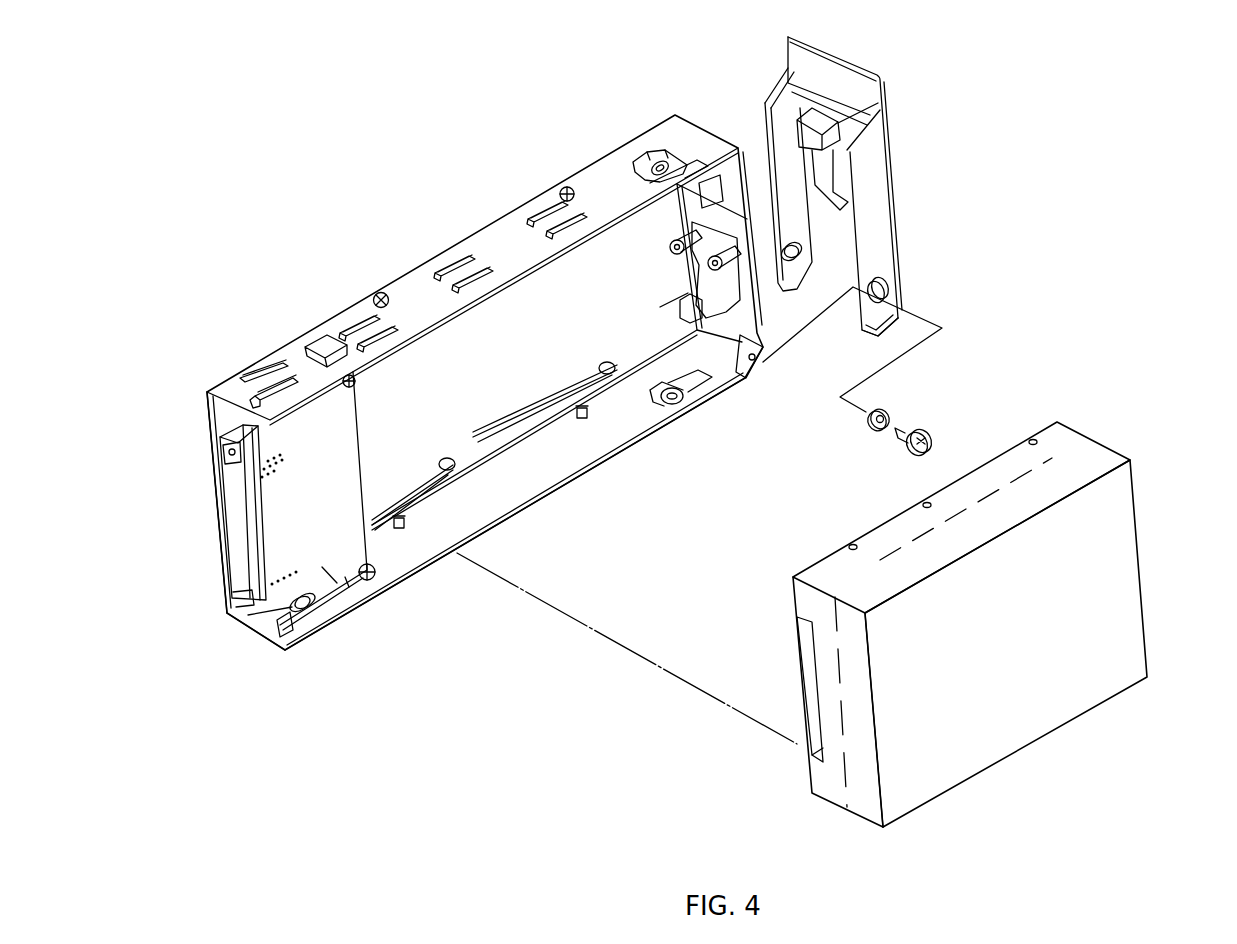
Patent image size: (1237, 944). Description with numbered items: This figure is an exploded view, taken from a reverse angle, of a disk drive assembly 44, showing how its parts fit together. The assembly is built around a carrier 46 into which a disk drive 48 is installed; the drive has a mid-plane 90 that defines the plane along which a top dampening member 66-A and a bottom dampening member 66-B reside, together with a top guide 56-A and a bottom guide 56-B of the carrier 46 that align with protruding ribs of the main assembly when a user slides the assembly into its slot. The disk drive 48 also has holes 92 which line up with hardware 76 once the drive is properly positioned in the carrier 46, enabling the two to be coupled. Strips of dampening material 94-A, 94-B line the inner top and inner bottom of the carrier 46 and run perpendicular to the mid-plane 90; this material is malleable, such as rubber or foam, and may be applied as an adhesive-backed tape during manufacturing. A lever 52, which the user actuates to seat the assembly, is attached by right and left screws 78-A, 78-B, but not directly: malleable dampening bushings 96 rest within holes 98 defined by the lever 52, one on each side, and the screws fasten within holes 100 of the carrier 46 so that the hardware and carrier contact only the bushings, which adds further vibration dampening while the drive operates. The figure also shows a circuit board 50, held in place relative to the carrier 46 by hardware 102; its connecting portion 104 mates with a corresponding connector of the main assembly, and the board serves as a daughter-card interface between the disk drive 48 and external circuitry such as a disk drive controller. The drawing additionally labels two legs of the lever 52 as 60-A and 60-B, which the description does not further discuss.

The disk drive assembly 44 is at (1118, 130).
The carrier 46 is at (496, 381).
The disk drive 48 is at (1145, 636).
The circuit board 50 is at (330, 526).
The lever 52 is at (845, 77).
The top guide 56-A is at (533, 213).
The bottom guide 56-B is at (372, 600).
The first bracket leg 60-A is at (865, 338).
The second bracket leg 60-B is at (793, 290).
The top dampening member 66-A is at (650, 163).
The bottom dampening member 66-B is at (666, 402).
The hardware 76 is at (380, 294).
The right screw 78-A is at (935, 436).
The left screw 78-B is at (688, 312).
The mid-plane 90 is at (896, 550).
The holes 92 is at (853, 545).
The strip of dampening material 94-A is at (512, 291).
The strip of dampening material 94-B is at (530, 490).
The dampening bushings 96 is at (886, 414).
The holes 98 is at (882, 290).
The holes 100 is at (755, 362).
The hardware 102 is at (348, 390).
The connecting portion 104 is at (228, 525).